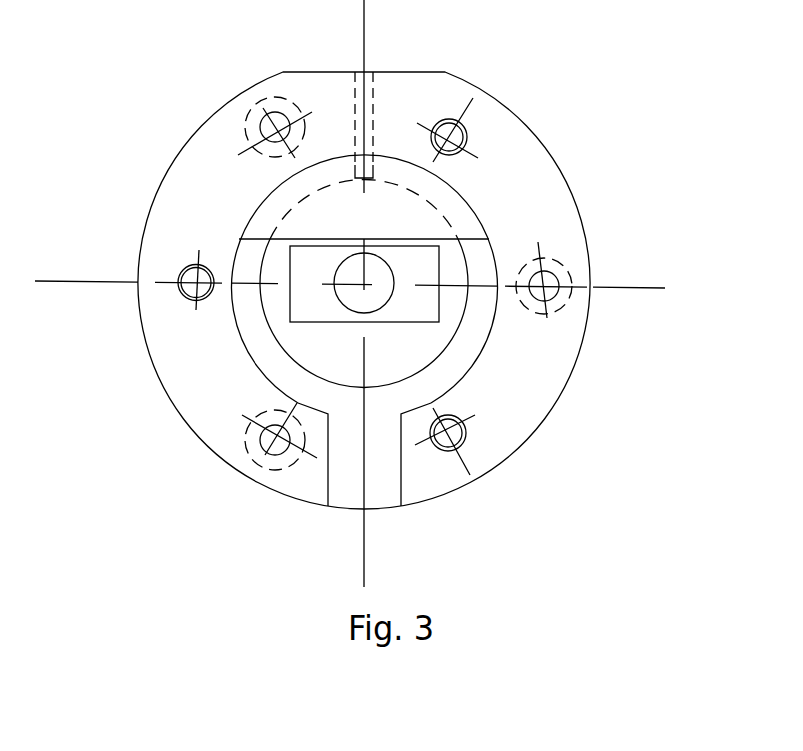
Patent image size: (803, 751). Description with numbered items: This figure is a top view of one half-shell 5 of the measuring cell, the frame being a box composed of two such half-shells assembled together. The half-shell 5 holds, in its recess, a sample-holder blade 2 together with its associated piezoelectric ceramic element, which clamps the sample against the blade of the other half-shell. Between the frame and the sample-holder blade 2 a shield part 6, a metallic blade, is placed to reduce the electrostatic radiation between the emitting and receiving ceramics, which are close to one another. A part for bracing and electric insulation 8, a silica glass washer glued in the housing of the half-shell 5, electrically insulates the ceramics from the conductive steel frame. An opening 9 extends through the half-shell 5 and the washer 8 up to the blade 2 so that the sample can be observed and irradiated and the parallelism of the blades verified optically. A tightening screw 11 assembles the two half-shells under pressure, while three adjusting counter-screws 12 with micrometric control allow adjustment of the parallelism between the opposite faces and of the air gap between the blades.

The sample-holder blade 2 is at (433, 258).
The half-shell 5 is at (568, 245).
The shield part 6 is at (418, 217).
The part for bracing and electric insulation 8 is at (302, 348).
The opening 9 is at (380, 292).
The tightening screw 11 is at (550, 280).
The adjusting counter-screw 12 is at (187, 275).